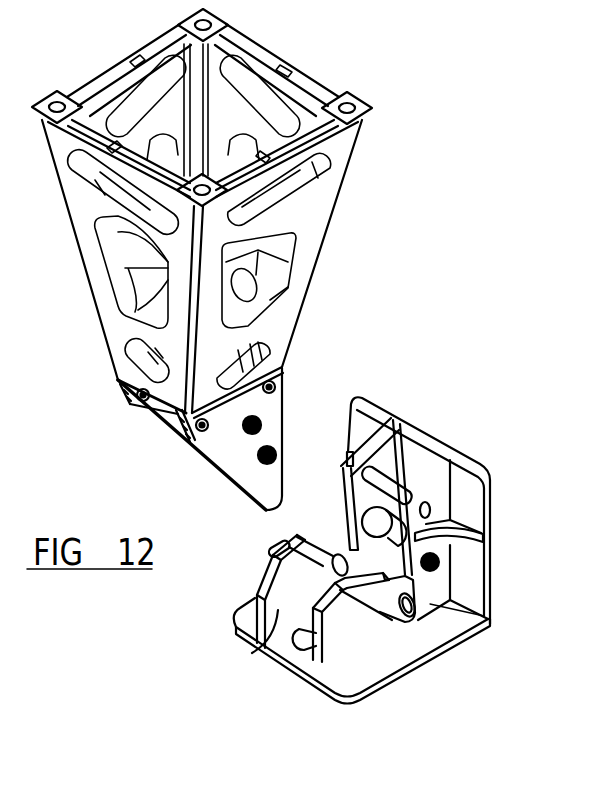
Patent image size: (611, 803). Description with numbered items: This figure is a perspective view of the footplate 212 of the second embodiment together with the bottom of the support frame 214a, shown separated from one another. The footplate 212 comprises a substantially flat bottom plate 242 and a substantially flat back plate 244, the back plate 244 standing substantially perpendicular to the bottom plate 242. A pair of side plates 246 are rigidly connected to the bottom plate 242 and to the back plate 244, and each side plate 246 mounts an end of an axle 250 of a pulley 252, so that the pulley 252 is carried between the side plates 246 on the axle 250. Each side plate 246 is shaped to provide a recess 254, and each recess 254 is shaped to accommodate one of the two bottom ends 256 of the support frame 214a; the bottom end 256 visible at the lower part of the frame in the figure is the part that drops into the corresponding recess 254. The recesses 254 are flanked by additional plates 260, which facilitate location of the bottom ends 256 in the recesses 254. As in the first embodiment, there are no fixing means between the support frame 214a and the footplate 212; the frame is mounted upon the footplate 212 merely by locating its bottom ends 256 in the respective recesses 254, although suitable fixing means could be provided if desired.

The support frame 214a is at (325, 203).
The bottom end 256 is at (233, 468).
The footplate 212 is at (333, 690).
The back plate 244 is at (468, 480).
The bottom plate 242 is at (438, 638).
The axle 250 is at (440, 570).
The side plate 246 is at (310, 668).
The additional plate 260 is at (380, 598).
The pulley 252 is at (373, 525).
The recess 254 is at (272, 546).